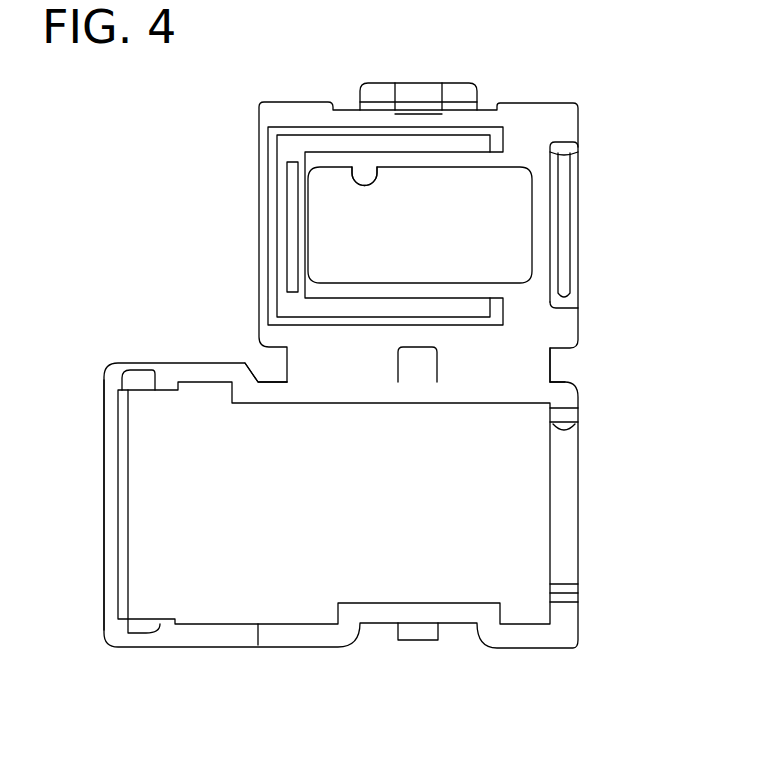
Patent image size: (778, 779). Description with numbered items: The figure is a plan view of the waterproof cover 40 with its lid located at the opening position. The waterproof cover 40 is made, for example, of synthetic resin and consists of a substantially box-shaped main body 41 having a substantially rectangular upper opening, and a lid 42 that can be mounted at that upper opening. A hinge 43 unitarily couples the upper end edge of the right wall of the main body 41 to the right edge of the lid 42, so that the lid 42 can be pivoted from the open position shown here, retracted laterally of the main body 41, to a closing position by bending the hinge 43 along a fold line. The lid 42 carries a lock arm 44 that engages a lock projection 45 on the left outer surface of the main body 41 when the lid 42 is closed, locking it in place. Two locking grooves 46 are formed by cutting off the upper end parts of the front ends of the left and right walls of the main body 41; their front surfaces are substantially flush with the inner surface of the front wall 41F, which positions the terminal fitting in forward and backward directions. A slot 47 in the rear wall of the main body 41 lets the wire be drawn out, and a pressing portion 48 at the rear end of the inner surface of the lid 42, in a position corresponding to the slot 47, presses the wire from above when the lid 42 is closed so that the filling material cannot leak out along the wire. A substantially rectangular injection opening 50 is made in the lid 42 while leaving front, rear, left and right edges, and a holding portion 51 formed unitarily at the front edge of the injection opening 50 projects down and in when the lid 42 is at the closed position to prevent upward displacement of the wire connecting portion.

The waterproof cover 40 is at (108, 208).
The main body 41 is at (223, 640).
The front wall 41F is at (106, 473).
The lid 42 is at (272, 100).
The hinge 43 is at (296, 361).
The lock arm 44 is at (462, 86).
The lock projection 45 is at (427, 633).
The locking grooves 46 is at (129, 386).
The slot 47 is at (559, 578).
The pressing portion 48 is at (571, 258).
The injection opening 50 is at (352, 173).
The holding portion 51 is at (298, 195).